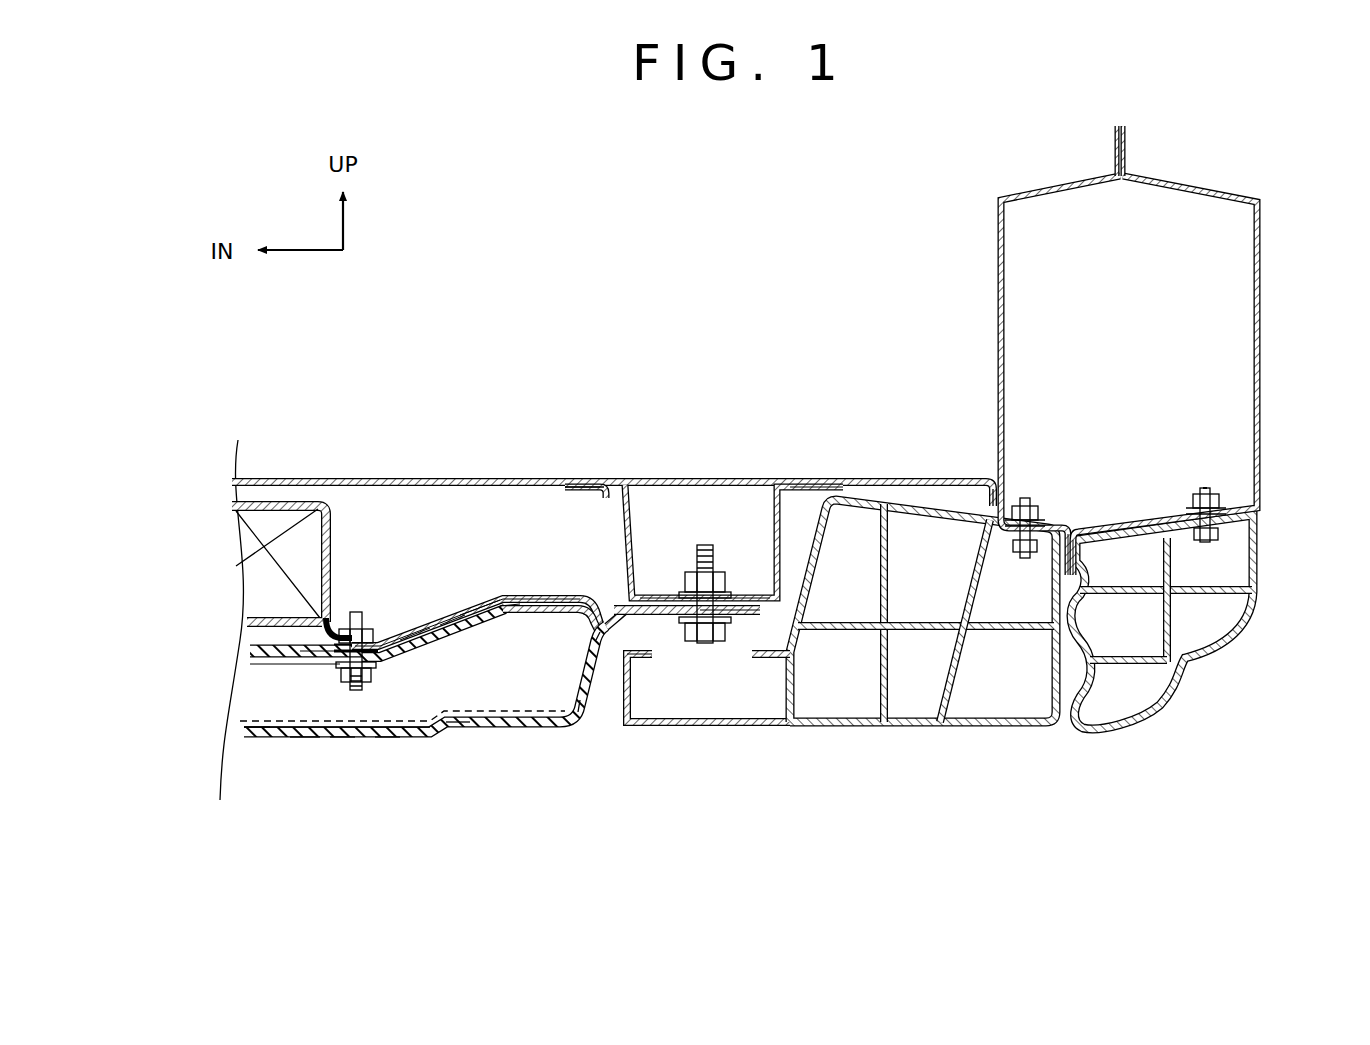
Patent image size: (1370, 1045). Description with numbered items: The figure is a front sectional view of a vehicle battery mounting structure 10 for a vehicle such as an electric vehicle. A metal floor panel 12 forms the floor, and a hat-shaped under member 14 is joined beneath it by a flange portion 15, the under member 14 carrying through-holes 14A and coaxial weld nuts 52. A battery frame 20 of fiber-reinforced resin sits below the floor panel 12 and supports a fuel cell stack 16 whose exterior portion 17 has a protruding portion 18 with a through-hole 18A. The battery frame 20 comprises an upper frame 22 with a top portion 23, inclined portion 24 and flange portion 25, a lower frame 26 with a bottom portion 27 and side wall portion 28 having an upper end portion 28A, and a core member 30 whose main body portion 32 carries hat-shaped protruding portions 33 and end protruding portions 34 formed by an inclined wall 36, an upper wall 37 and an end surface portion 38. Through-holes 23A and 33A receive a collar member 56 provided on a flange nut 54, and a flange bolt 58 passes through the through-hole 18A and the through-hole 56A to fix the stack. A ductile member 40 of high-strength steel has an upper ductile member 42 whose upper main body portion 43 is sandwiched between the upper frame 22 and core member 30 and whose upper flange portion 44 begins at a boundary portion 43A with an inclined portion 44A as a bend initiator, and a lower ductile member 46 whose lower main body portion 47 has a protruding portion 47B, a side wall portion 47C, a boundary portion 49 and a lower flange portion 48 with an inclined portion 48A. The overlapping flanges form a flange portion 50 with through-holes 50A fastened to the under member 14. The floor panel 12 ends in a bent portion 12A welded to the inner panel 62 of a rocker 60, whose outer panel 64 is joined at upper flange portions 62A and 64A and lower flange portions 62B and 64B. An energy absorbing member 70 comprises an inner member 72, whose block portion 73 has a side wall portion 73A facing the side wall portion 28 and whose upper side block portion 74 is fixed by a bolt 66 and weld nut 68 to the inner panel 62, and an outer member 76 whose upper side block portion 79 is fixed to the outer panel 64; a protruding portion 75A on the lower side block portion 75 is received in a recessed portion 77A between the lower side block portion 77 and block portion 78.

The vehicle battery mounting structure 10 is at (342, 758).
The floor panel 12 is at (438, 476).
The bent portion 12A is at (990, 505).
The under member 14 is at (716, 507).
The through-hole 14A is at (666, 596).
The flange portion 15 is at (590, 484).
The fuel cell stack 16 is at (337, 502).
The exterior portion 17 is at (272, 500).
The protruding portion 18 is at (375, 628).
The through-hole 18A is at (345, 636).
The battery frame 20 is at (305, 742).
The upper frame 22 is at (486, 594).
The top portion 23 is at (272, 626).
The through-hole 23A is at (378, 625).
The inclined portion 24 is at (452, 612).
The flange portion 25 is at (577, 598).
The lower frame 26 is at (386, 742).
The bottom portion 27 is at (268, 740).
The side wall portion 28 is at (604, 642).
The upper end portion 28A is at (582, 618).
The core member 30 is at (275, 690).
The main body portion 32 is at (248, 722).
The protruding portion 33 is at (255, 663).
The through-hole 33A is at (300, 660).
The protruding portion 34 is at (480, 729).
The inclined wall 36 is at (425, 640).
The upper wall 37 is at (458, 622).
The end surface portion 38 is at (586, 718).
The ductile member 40 is at (591, 595).
The upper ductile member 42 is at (556, 595).
The upper main body portion 43 is at (502, 597).
The boundary portion 43A is at (590, 494).
The upper flange portion 44 is at (768, 594).
The inclined portion 44A is at (601, 494).
The lower ductile member 46 is at (610, 640).
The lower main body portion 47 is at (423, 725).
The protruding portion 47B is at (442, 738).
The side wall portion 47C is at (566, 714).
The lower flange portion 48 is at (732, 715).
The inclined portion 48A is at (652, 656).
The boundary portion 49 is at (505, 610).
The flange portion 50 is at (725, 598).
The through-hole 50A is at (729, 607).
The weld nut 52 is at (705, 546).
The flange nut 54 is at (539, 615).
The collar member 56 is at (370, 668).
The through-hole 56A is at (362, 640).
The flange bolt 58 is at (372, 630).
The rocker 60 is at (1137, 348).
The inner panel 62 is at (1018, 348).
The upper flange portion 62A is at (1114, 152).
The lower flange portion 62B is at (1068, 545).
The outer panel 64 is at (1215, 348).
The upper flange portion 64A is at (1126, 152).
The lower flange portion 64B is at (1076, 548).
The bolt 66 is at (1030, 558).
The weld nut 68 is at (1028, 505).
The energy absorbing member 70 is at (978, 625).
The inner member 72 is at (860, 625).
The block portion 73 is at (714, 727).
The side wall portion 73A is at (638, 686).
The upper side block portion 74 is at (990, 527).
The lower side block portion 75 is at (1005, 732).
The protruding portion 75A is at (1068, 672).
The outer member 76 is at (1195, 621).
The lower side block portion 77 is at (1150, 590).
The recessed portion 77A is at (1103, 651).
The block portion 78 is at (1136, 716).
The upper side block portion 79 is at (1215, 500).